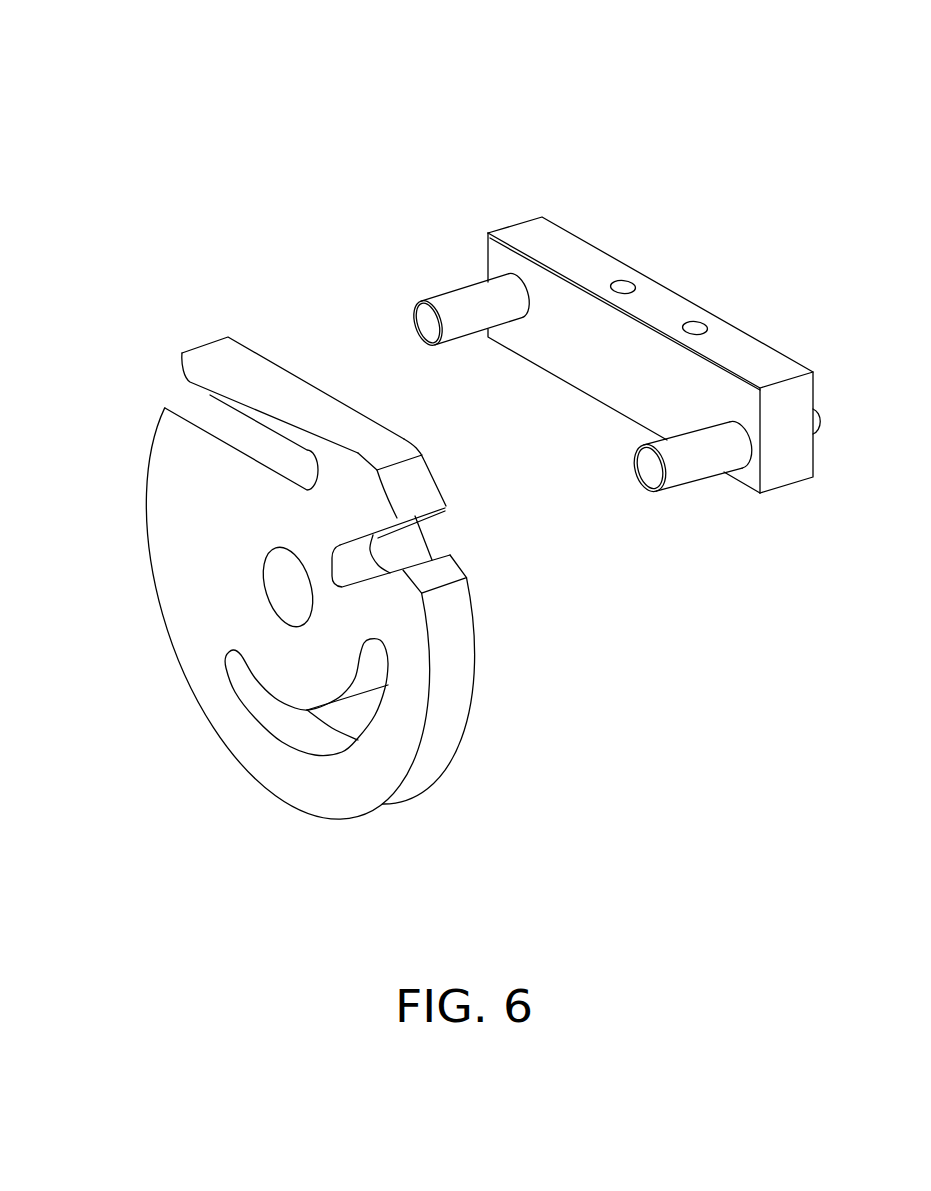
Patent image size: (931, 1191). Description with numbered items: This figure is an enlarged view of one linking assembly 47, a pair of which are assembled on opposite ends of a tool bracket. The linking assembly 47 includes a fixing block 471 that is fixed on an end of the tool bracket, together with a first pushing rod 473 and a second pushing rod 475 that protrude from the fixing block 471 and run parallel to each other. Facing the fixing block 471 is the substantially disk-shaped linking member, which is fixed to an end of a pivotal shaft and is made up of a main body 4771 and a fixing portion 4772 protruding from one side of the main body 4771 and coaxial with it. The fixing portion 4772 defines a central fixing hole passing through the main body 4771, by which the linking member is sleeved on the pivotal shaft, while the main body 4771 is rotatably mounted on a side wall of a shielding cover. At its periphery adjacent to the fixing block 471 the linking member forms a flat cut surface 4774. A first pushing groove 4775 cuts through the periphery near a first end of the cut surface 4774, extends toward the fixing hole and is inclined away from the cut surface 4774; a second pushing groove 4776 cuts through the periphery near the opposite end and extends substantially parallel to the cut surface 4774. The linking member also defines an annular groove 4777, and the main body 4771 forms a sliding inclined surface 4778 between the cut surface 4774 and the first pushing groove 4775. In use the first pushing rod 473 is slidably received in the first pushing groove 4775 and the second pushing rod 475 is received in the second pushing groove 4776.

The linking assembly 47 is at (453, 63).
The fixing block 471 is at (773, 477).
The first pushing rod 473 is at (688, 465).
The second pushing rod 475 is at (465, 301).
The main body 4771 is at (210, 627).
The fixing portion 4772 is at (408, 543).
The cut surface 4774 is at (237, 352).
The first pushing groove 4775 is at (358, 566).
The second pushing groove 4776 is at (193, 410).
The annular groove 4777 is at (314, 740).
The sliding inclined surface 4778 is at (418, 488).